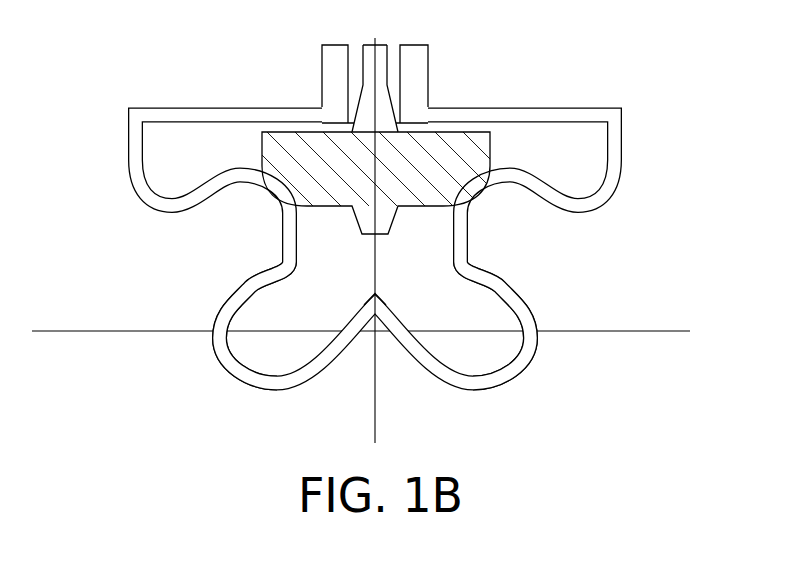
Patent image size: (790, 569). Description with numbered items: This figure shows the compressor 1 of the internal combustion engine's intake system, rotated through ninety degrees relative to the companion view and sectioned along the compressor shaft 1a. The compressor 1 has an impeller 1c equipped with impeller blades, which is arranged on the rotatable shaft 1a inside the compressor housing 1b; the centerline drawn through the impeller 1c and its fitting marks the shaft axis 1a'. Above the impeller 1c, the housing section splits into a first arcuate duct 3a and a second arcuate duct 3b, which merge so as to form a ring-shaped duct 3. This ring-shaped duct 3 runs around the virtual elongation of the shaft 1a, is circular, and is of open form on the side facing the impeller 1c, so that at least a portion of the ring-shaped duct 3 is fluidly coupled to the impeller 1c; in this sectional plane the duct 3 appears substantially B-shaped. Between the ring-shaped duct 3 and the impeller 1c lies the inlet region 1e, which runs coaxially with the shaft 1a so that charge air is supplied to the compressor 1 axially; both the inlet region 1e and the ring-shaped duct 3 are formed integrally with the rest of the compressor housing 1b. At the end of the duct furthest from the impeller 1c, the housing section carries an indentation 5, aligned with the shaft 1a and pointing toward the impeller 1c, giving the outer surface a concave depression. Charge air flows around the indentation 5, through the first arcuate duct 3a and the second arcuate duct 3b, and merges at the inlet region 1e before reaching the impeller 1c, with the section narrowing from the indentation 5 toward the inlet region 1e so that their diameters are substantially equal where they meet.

The compressor 1 is at (130, 73).
The compressor shaft 1a is at (340, 82).
The center axis of attachment portion 1a' is at (420, 244).
The compressor housing 1b is at (617, 110).
The impeller 1c is at (443, 147).
The inlet region 1e is at (315, 237).
The ring-shaped duct 3 is at (371, 357).
The first arcuate duct 3a is at (483, 358).
The second arcuate duct 3b is at (264, 362).
The indentation 5 is at (376, 292).